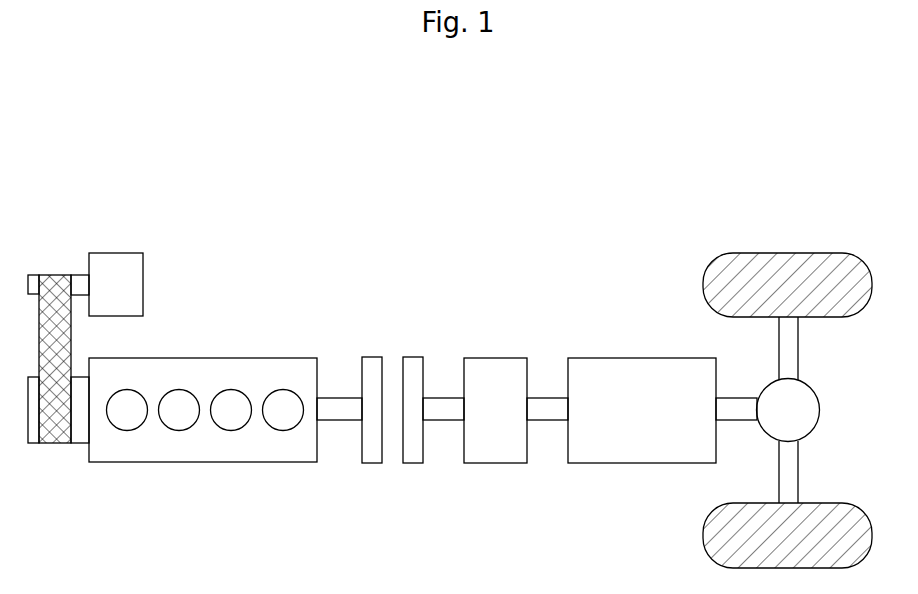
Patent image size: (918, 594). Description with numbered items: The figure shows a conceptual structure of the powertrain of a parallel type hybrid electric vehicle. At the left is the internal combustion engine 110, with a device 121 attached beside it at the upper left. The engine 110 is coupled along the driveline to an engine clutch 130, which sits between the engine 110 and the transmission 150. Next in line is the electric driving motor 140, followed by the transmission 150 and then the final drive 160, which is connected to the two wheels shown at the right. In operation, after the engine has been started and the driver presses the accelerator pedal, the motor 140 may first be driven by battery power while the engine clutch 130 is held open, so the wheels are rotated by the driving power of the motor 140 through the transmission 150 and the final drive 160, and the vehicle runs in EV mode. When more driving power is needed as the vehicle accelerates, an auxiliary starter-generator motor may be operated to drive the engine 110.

The internal combustion engine 110 is at (277, 358).
The starter/auxiliary device connected to engine 121 is at (143, 265).
The engine clutch 130 is at (420, 356).
The electric motor 140 is at (500, 358).
The transmission 150 is at (675, 358).
The final drive 160 is at (818, 393).